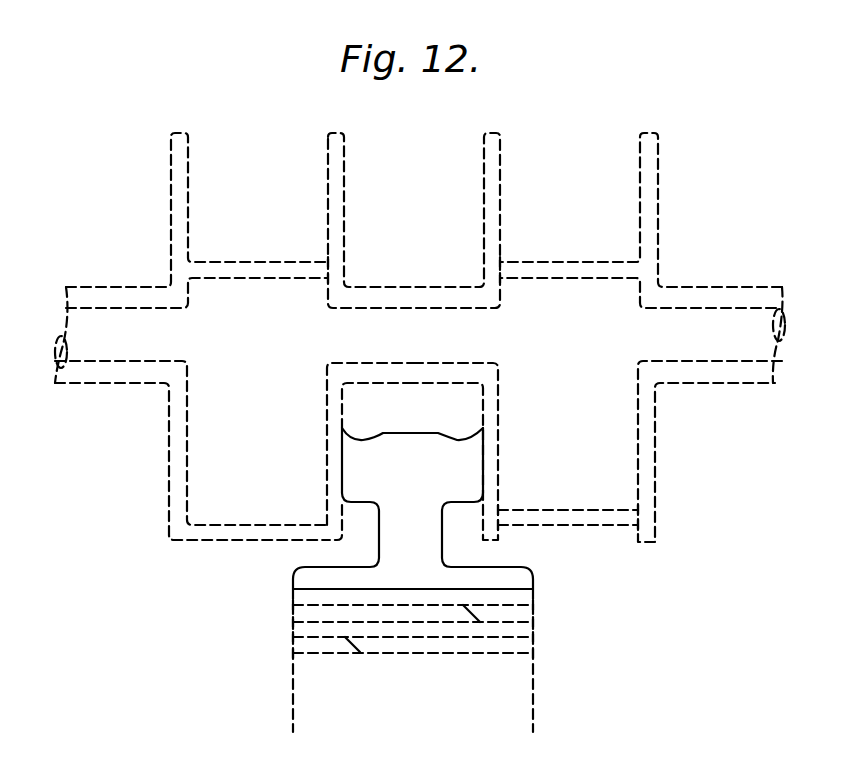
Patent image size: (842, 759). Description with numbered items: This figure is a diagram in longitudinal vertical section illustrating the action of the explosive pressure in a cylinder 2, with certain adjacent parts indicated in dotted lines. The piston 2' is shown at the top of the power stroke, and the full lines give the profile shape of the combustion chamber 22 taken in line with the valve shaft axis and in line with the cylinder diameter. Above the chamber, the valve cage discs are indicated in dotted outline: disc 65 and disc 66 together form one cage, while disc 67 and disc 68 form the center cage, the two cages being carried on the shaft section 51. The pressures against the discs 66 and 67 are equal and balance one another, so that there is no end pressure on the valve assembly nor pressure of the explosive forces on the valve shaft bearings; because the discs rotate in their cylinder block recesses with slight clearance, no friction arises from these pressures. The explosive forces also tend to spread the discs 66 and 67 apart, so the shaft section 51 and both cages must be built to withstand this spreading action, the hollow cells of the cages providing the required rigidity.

The cylinder 2 is at (377, 580).
The piston 2' is at (464, 660).
The combustion chamber 22 is at (400, 567).
The shaft section 51 is at (432, 310).
The disc 65 is at (171, 217).
The disc 66 is at (327, 408).
The disc 67 is at (498, 405).
The disc 68 is at (658, 212).